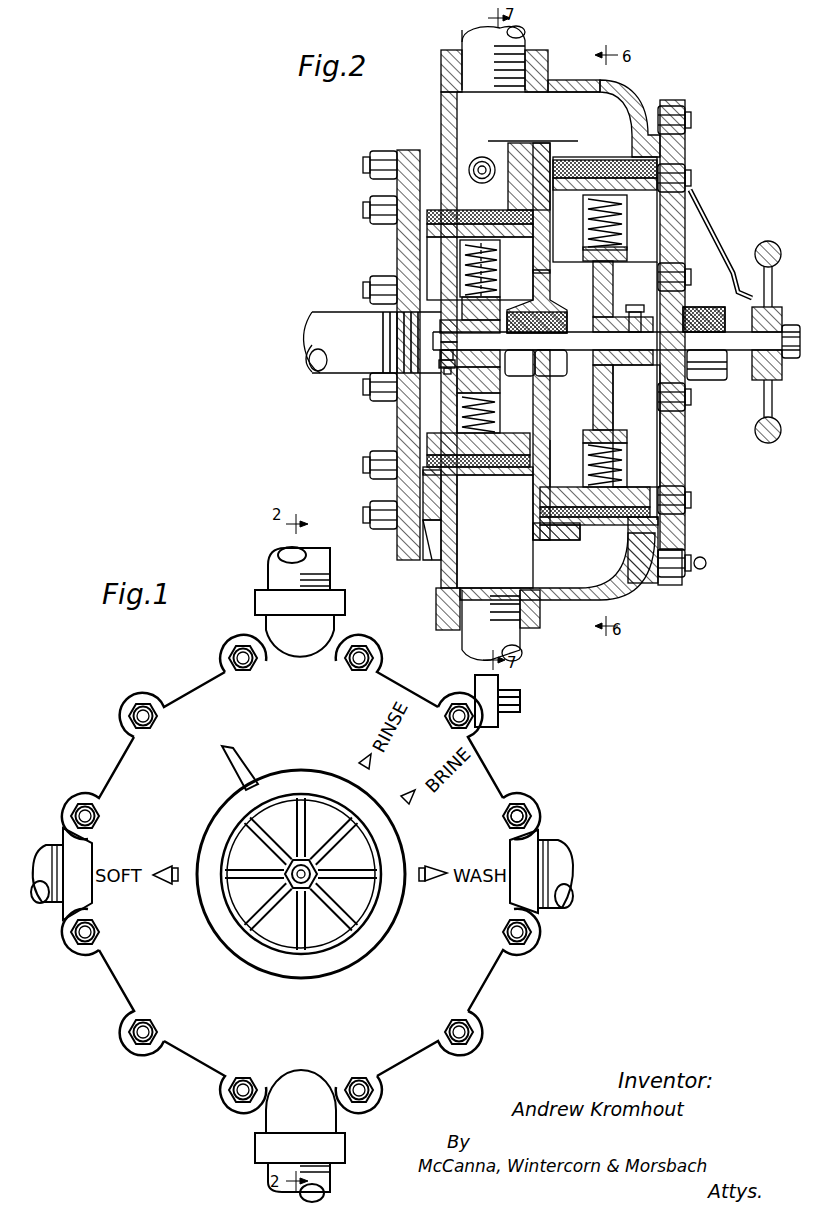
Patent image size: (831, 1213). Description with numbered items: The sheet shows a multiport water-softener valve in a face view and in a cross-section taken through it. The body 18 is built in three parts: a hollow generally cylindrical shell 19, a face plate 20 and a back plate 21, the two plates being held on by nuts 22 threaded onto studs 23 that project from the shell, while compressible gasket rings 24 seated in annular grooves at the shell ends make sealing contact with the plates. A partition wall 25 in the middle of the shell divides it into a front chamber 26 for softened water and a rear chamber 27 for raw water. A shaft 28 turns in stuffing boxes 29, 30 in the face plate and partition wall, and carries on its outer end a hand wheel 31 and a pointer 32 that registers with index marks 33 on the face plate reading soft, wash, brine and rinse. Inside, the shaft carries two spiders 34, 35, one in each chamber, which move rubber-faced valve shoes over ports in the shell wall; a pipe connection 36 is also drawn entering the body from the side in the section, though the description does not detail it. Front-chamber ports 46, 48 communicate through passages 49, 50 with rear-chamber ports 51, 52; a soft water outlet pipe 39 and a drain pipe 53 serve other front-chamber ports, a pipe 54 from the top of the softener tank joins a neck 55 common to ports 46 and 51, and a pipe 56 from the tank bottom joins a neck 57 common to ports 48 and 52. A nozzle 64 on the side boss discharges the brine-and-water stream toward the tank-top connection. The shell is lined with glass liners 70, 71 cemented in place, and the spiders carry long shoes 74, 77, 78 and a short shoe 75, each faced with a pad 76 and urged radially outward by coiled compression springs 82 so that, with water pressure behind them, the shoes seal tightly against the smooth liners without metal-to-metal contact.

In FIG. 2, the body 18 is at (688, 460).
In FIG. 1, the body 18 is at (498, 770).
In FIG. 2, the shell 19 is at (432, 510).
In FIG. 2, the face plate 20 is at (672, 585).
In FIG. 1, the face plate 20 is at (468, 978).
In FIG. 2, the back plate 21 is at (397, 418).
In FIG. 2, the nuts 22 is at (700, 555).
In FIG. 1, the nuts 22 is at (535, 798).
In FIG. 2, the studs 23 is at (708, 565).
In FIG. 1, the studs 23 is at (523, 816).
In FIG. 2, the gasket rings 24 is at (645, 545).
In FIG. 2, the partition wall 25 is at (593, 400).
In FIG. 2, the front chamber 26 is at (636, 426).
In FIG. 2, the rear chamber 27 is at (462, 391).
In FIG. 2, the shaft 28 is at (580, 350).
In FIG. 2, the stuffing box 29 is at (686, 318).
In FIG. 2, the stuffing box 30 is at (540, 306).
In FIG. 2, the hand wheel 31 is at (776, 440).
In FIG. 1, the hand wheel 31 is at (385, 922).
In FIG. 2, the pointer 32 is at (708, 232).
In FIG. 1, the pointer 32 is at (240, 762).
In FIG. 1, the index marks 33 is at (163, 884).
In FIG. 2, the spider 34 is at (613, 276).
In FIG. 2, the spider 35 is at (462, 318).
In FIG. 2, the inlet pipe 36 is at (343, 366).
In FIG. 1, the soft water outlet pipe 39 is at (52, 906).
In FIG. 2, the port 46 is at (610, 150).
In FIG. 2, the port 48 is at (582, 528).
In FIG. 2, the passage 49 is at (568, 96).
In FIG. 2, the passage 50 is at (580, 580).
In FIG. 2, the port 51 is at (524, 207).
In FIG. 2, the port 52 is at (495, 531).
In FIG. 1, the drain pipe 53 is at (560, 862).
In FIG. 2, the pipe 54 is at (462, 44).
In FIG. 1, the pipe 54 is at (268, 566).
In FIG. 2, the neck 55 is at (441, 104).
In FIG. 1, the neck 55 is at (346, 612).
In FIG. 2, the pipe 56 is at (525, 638).
In FIG. 1, the pipe 56 is at (330, 1165).
In FIG. 2, the neck 57 is at (441, 566).
In FIG. 1, the neck 57 is at (336, 1120).
In FIG. 2, the nozzle 64 is at (472, 163).
In FIG. 2, the glass liner 70 is at (686, 166).
In FIG. 2, the glass liner 71 is at (398, 243).
In FIG. 2, the long shoe 74 is at (578, 490).
In FIG. 2, the short shoe 75 is at (567, 212).
In FIG. 2, the pad 76 is at (430, 462).
In FIG. 2, the long shoe 77 is at (458, 438).
In FIG. 2, the long shoe 78 is at (452, 258).
In FIG. 2, the coiled compression springs 82 is at (497, 410).